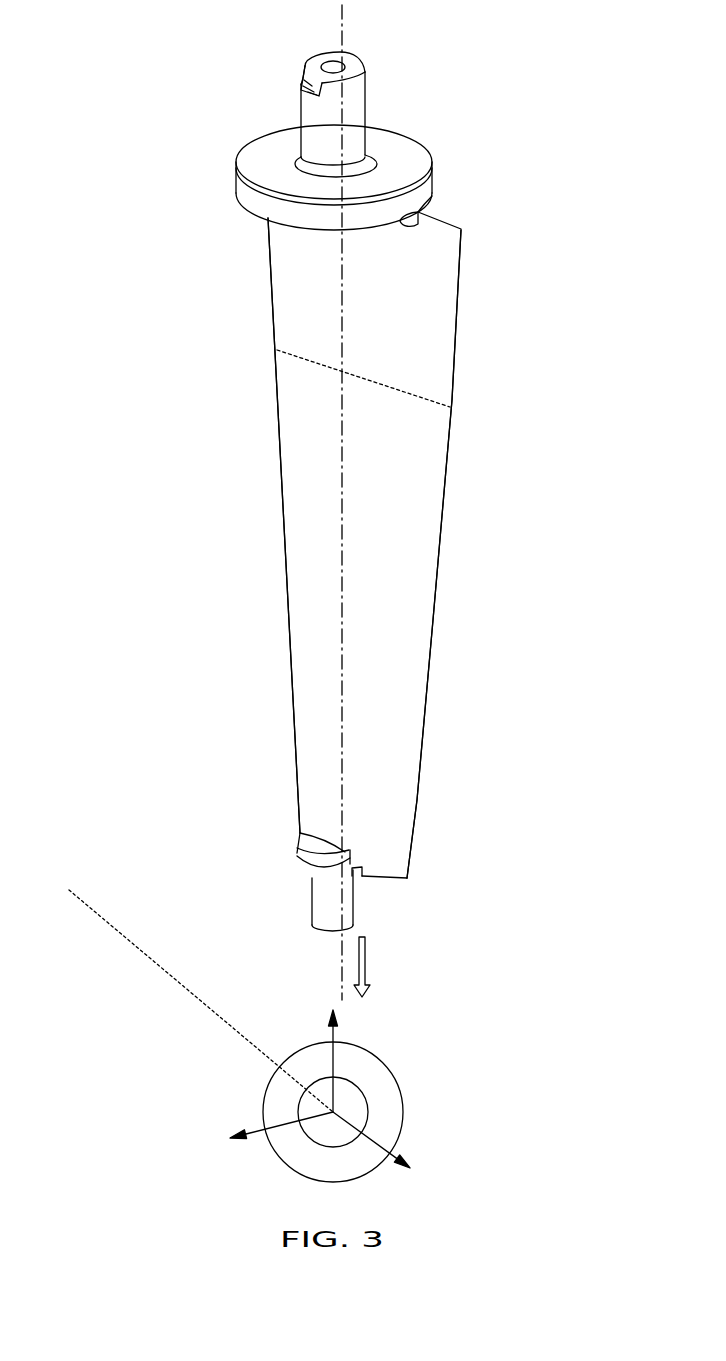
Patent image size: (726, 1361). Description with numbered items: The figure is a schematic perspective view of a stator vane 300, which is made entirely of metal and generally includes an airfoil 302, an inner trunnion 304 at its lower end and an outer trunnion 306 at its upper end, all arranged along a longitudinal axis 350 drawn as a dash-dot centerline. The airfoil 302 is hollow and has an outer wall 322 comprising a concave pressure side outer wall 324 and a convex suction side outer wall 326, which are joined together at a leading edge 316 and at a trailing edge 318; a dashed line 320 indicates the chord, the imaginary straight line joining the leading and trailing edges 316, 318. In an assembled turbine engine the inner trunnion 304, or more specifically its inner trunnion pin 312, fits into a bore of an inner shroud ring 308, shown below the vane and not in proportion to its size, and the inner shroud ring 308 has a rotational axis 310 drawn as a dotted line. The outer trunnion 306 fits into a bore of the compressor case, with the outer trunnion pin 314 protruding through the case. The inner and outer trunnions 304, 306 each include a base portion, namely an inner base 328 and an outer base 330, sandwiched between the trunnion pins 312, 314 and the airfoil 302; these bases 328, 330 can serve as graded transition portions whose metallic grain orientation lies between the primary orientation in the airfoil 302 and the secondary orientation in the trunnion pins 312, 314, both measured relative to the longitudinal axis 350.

The vane 300 is at (242, 75).
The airfoil 302 is at (445, 350).
The inner trunnion 304 is at (194, 840).
The outer trunnion 306 is at (502, 45).
The inner shroud ring 308 is at (385, 1106).
The rotational axis 310 is at (213, 1010).
The inner trunnion pin 312 is at (348, 893).
The outer trunnion pin 314 is at (355, 109).
The leading edge 316 is at (266, 440).
The trailing edge 318 is at (464, 426).
The chord 320 is at (316, 362).
The outer wall 322 is at (424, 573).
The pressure side outer wall 324 is at (375, 480).
The suction side outer wall 326 is at (431, 451).
The inner base 328 is at (305, 870).
The outer base 330 is at (252, 188).
The longitudinal axis 350 is at (345, 36).